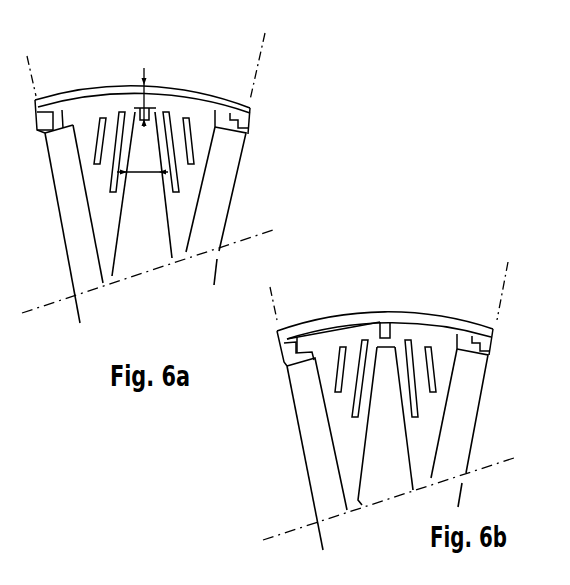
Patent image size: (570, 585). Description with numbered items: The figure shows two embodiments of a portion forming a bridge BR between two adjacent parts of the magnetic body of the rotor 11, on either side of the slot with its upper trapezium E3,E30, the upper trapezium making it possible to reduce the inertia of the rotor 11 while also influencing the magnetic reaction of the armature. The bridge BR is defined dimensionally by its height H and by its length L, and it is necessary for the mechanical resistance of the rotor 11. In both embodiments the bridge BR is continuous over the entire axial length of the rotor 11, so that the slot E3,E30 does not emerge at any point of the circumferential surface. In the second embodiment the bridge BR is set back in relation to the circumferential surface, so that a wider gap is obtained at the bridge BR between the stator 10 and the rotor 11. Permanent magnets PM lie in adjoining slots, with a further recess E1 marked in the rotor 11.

In FIG. 6A, the stator 10 is at (56, 84).
In FIG. 6B, the stator 10 is at (466, 309).
In FIG. 6A, the rotor 11 is at (198, 128).
In FIG. 6B, the rotor 11 is at (323, 338).
In FIG. 6A, the permanent magnet PM is at (70, 177).
In FIG. 6B, the permanent magnet PM is at (322, 476).
In FIG. 6A, the bridge BR is at (150, 98).
In FIG. 6B, the bridge BR is at (384, 338).
In FIG. 6A, the height H is at (144, 70).
In FIG. 6A, the first recess / magnet slot wall E1 is at (105, 242).
In FIG. 6A, the slot and upper trapezium E3,E30 is at (143, 247).
In FIG. 6B, the slot and upper trapezium E3,E30 is at (385, 470).
In FIG. 6A, the length L is at (143, 174).